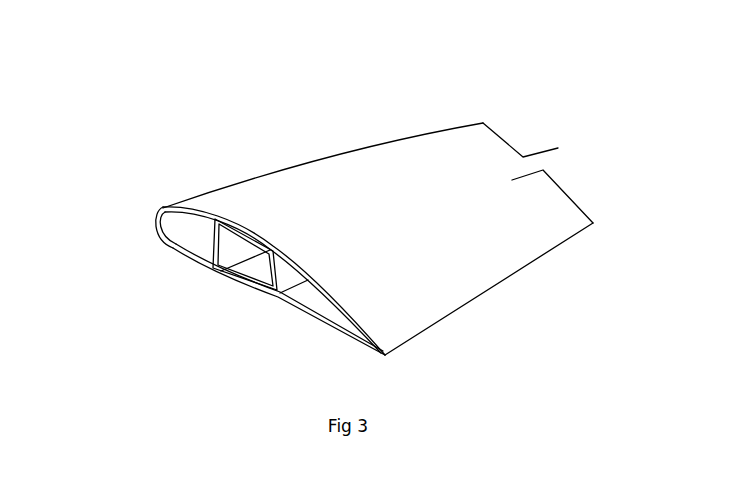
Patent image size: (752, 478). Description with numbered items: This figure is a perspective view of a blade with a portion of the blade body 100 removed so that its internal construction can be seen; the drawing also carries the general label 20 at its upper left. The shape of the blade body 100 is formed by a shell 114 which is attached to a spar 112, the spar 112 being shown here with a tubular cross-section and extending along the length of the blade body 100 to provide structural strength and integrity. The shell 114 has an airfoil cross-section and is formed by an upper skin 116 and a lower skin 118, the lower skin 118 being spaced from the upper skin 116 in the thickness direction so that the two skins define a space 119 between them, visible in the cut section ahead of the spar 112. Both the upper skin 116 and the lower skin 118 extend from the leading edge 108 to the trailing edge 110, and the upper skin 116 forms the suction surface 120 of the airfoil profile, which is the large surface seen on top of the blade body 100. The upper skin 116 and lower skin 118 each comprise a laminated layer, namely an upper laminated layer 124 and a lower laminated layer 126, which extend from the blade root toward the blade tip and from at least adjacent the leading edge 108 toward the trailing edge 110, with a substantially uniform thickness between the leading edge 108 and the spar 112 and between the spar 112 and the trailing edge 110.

The airflow 20 is at (128, 48).
The blade body 100 is at (338, 135).
The leading edge 108 is at (305, 163).
The trailing edge 110 is at (457, 318).
The spar 112 is at (250, 270).
The shell 114 is at (272, 195).
The upper skin 116 is at (447, 207).
The lower skin 118 is at (483, 306).
The space 119 is at (197, 233).
The suction surface 120 is at (366, 234).
The upper laminated layer 124 is at (350, 329).
The lower laminated layer 126 is at (303, 307).